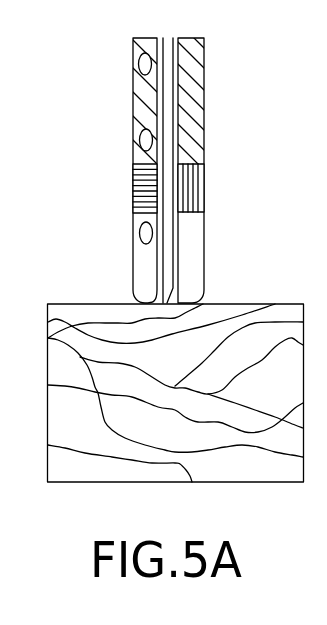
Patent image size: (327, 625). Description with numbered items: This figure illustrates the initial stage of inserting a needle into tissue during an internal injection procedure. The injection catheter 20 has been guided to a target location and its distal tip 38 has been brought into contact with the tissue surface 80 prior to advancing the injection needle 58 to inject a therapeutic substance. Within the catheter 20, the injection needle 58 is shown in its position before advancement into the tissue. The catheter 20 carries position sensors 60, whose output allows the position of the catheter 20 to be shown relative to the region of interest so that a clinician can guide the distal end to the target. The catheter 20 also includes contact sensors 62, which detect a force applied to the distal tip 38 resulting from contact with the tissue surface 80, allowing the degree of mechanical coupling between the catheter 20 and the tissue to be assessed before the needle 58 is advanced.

The injection catheter 20 is at (186, 162).
The distal tip 38 is at (192, 247).
The injection needle 58 is at (163, 265).
The position sensors 60 is at (138, 238).
The contact sensors 62 is at (142, 195).
The tissue surface 80 is at (209, 303).